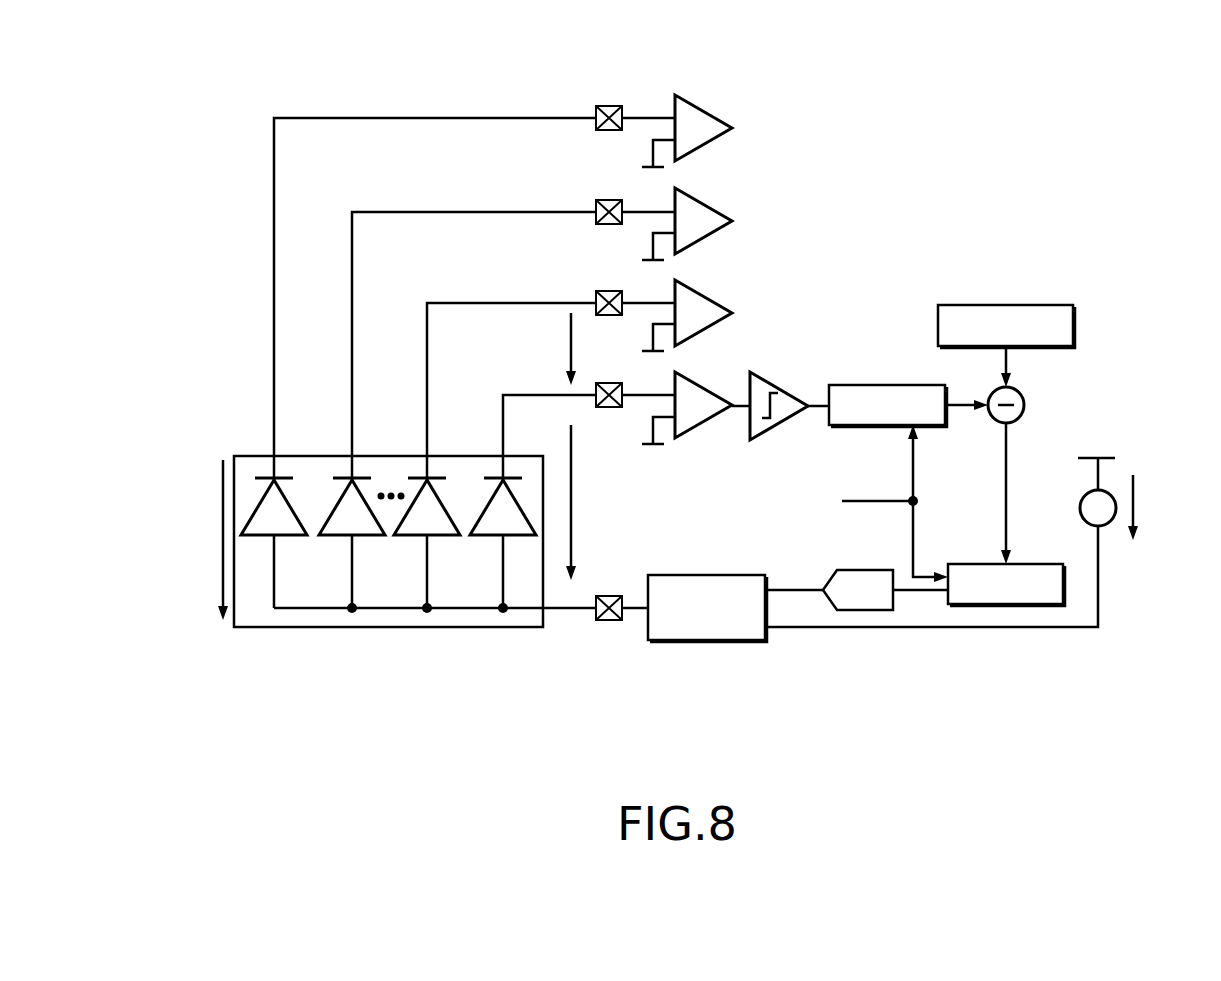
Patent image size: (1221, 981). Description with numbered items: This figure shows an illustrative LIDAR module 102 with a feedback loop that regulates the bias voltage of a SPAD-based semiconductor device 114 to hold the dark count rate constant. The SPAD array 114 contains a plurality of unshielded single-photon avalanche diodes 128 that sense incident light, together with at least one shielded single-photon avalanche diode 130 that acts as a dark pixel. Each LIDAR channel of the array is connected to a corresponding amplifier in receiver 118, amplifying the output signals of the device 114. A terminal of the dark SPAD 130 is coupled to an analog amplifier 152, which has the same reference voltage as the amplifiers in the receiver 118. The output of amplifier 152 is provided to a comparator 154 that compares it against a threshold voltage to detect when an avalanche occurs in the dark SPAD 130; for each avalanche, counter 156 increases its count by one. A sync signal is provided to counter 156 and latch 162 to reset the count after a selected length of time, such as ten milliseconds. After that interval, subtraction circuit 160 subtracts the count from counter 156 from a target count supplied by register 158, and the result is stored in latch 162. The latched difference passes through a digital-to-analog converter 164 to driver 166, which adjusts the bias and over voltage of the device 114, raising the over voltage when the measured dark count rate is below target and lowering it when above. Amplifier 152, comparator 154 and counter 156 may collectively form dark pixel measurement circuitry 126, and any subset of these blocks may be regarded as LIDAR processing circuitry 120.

The SPAD array / photodetector array 102 is at (160, 240).
The SPAD-based semiconductor device 114 is at (246, 456).
The receiver 118 is at (753, 89).
The LIDAR processing circuitry 120 is at (1122, 700).
The dark pixel measurement circuitry 126 is at (790, 360).
The unshielded single-photon avalanche diodes 128 is at (269, 633).
The shielded single-photon avalanche diode 130 is at (472, 633).
The analog amplifier 152 is at (701, 438).
The comparator 154 is at (778, 438).
The counter 156 is at (886, 385).
The register 158 is at (1006, 305).
The subtraction circuit 160 is at (1024, 405).
The latch 162 is at (1063, 584).
The DAC 164 is at (870, 610).
The driver 166 is at (707, 640).